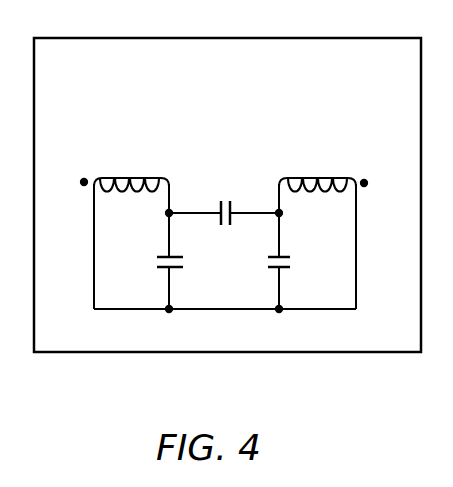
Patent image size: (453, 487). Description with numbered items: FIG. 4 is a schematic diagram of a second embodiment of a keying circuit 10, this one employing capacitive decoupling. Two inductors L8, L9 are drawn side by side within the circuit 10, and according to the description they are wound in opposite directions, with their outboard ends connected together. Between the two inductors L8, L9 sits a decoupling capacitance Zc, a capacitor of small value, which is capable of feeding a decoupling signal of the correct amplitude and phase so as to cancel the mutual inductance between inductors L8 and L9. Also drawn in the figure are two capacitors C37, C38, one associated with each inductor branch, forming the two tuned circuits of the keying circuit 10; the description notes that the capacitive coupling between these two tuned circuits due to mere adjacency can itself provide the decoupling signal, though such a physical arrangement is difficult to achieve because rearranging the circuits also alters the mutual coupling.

The keying circuit 10 is at (100, 85).
The inductor L8 is at (131, 170).
The inductor L9 is at (317, 170).
The decoupling capacitance Zc is at (228, 199).
The capacitor C37 is at (144, 261).
The capacitor C38 is at (256, 262).